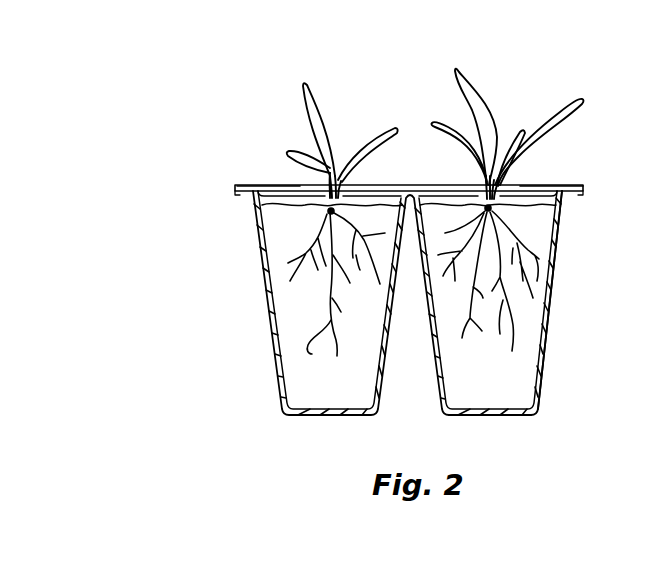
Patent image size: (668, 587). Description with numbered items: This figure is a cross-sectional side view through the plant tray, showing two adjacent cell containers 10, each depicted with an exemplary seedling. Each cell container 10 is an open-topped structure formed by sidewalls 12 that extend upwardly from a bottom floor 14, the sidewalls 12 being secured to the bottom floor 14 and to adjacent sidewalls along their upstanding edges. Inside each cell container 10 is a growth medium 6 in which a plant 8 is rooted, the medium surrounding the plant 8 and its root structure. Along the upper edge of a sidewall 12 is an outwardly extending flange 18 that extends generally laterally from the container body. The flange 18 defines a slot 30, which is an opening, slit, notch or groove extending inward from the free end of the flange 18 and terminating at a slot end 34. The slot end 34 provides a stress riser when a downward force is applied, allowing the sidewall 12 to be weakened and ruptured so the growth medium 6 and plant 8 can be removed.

The growth medium 6 is at (495, 378).
The plant 8 is at (487, 40).
The cell container 10 is at (263, 353).
The sidewall 12 is at (556, 296).
The bottom floor 14 is at (487, 414).
The flange 18 is at (237, 188).
The slot 30 is at (577, 188).
The slot end 34 is at (270, 186).